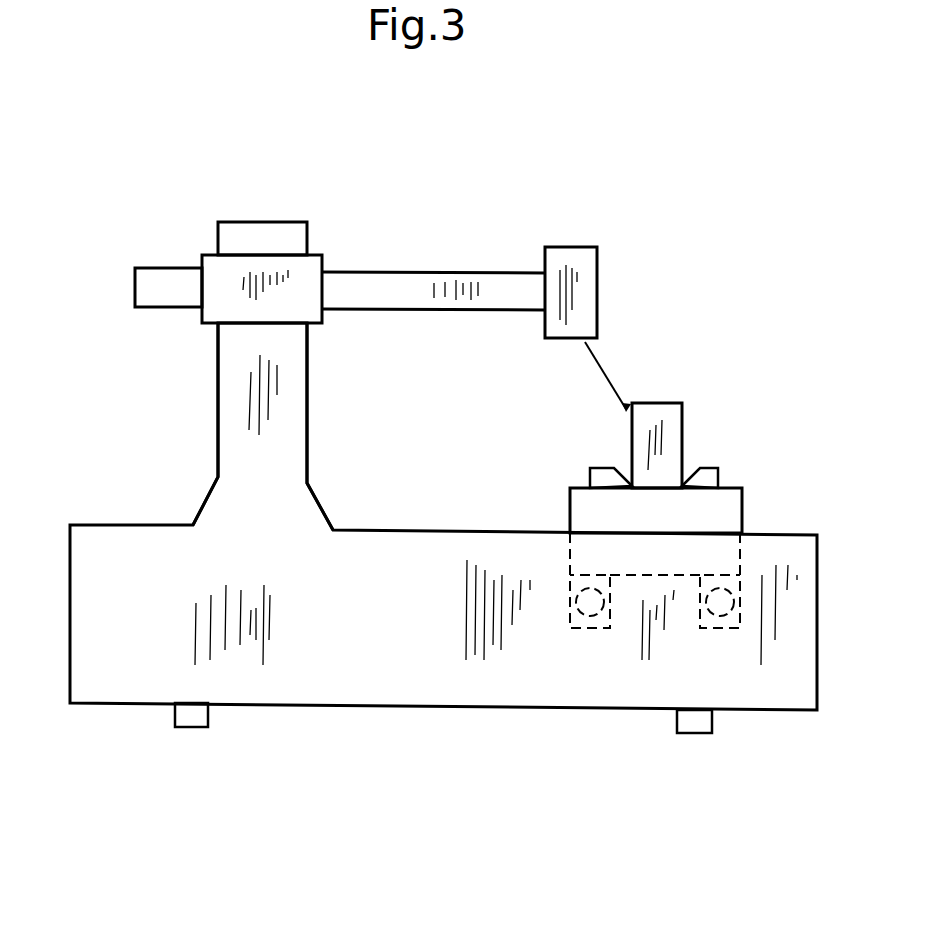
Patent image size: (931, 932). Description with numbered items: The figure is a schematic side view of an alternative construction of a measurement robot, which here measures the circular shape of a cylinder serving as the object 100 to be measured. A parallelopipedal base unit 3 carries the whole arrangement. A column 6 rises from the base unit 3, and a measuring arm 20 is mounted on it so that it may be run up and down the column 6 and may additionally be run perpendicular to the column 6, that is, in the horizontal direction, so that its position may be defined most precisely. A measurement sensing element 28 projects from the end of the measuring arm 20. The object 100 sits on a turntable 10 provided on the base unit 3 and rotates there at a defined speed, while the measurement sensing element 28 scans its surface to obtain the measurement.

The base unit 3 is at (407, 680).
The column 6 is at (237, 430).
The measuring arm 20 is at (412, 282).
The measurement sensing element 28 is at (608, 373).
The object to be measured 100 is at (663, 440).
The turntable 10 is at (723, 507).